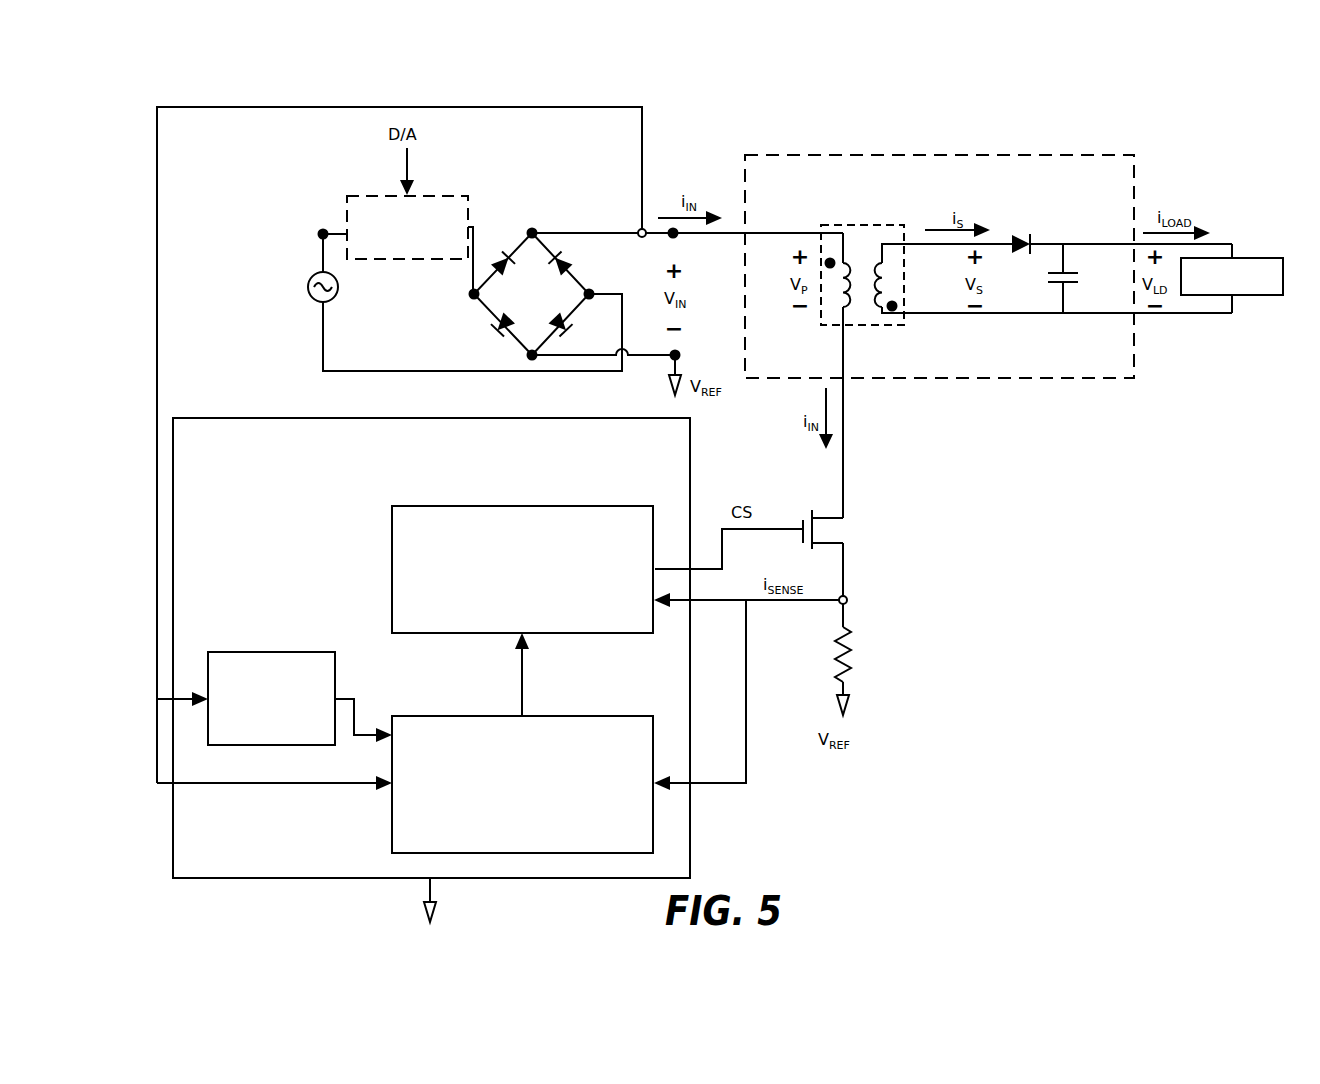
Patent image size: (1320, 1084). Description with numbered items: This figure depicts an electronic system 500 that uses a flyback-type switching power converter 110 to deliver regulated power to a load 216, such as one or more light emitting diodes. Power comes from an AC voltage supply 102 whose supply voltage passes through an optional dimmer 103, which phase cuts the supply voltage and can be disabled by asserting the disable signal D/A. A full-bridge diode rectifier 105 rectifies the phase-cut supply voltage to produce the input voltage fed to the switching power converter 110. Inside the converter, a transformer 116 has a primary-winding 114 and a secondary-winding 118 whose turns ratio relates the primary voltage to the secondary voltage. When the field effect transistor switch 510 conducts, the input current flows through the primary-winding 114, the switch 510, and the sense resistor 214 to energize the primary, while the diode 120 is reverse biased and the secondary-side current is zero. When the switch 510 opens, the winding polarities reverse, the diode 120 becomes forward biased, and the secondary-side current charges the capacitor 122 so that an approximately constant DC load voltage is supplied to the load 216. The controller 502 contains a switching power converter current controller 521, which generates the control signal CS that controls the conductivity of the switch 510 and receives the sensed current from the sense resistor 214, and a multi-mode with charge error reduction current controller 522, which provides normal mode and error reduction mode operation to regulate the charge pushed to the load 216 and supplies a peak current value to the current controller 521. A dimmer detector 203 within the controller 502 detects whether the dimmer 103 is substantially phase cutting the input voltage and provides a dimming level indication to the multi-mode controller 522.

The voltage supply 102 is at (317, 303).
The dimmer 103 is at (398, 245).
The full bridge diode rectifier 105 is at (532, 294).
The switching power converter 110 is at (745, 173).
The primary-winding 114 is at (841, 306).
The transformer 116 is at (1003, 267).
The secondary-winding 118 is at (886, 304).
The diode 120 is at (1019, 237).
The capacitor 122 is at (1076, 278).
The dimmer detector 203 is at (300, 698).
The sense resistor 214 is at (849, 655).
The load 216 is at (1263, 296).
The electronic system 500 is at (1190, 183).
The controller 502 is at (423, 675).
The switch 510 is at (838, 535).
The switching power converter current controller 521 is at (522, 569).
The multi-mode with charge error reduction current controller 522 is at (522, 784).